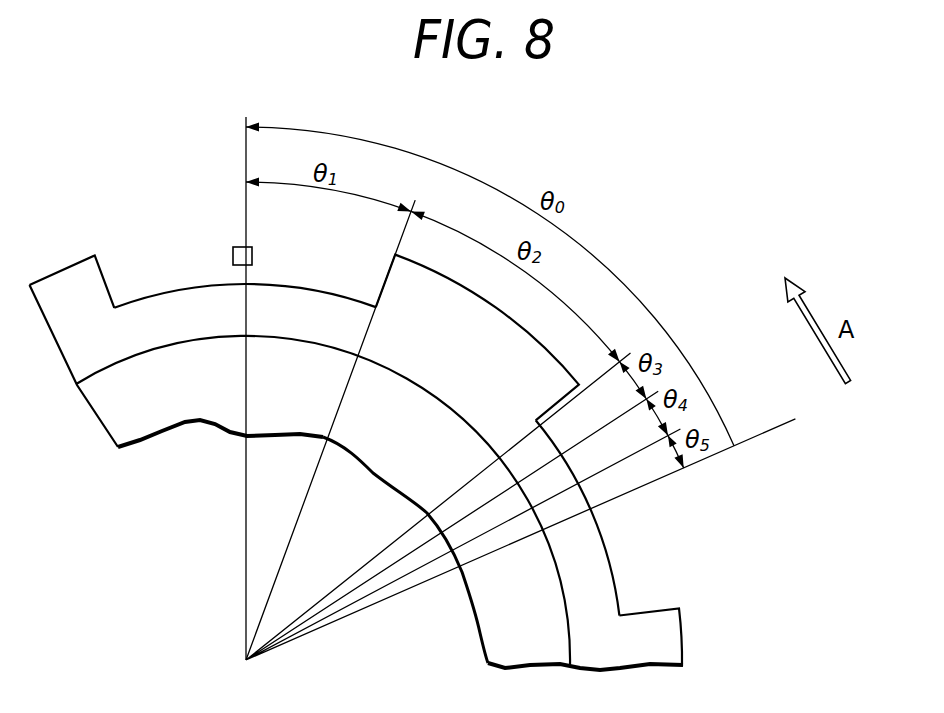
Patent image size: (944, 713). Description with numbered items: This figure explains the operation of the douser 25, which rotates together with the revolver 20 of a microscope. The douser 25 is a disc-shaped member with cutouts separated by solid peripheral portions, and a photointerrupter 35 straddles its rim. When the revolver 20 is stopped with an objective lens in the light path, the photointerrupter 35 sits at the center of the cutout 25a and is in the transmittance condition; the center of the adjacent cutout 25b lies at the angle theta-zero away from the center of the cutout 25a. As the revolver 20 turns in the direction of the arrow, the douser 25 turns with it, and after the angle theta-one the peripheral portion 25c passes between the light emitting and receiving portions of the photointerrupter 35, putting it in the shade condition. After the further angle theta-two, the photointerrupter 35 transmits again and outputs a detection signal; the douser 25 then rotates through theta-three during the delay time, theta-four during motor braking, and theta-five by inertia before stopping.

The revolver 20 is at (493, 645).
The douser 25 is at (663, 633).
The cutout 25a is at (153, 277).
The cutout 25b is at (620, 548).
The peripheral portion 25c is at (380, 282).
The photointerrupter 35 is at (233, 255).